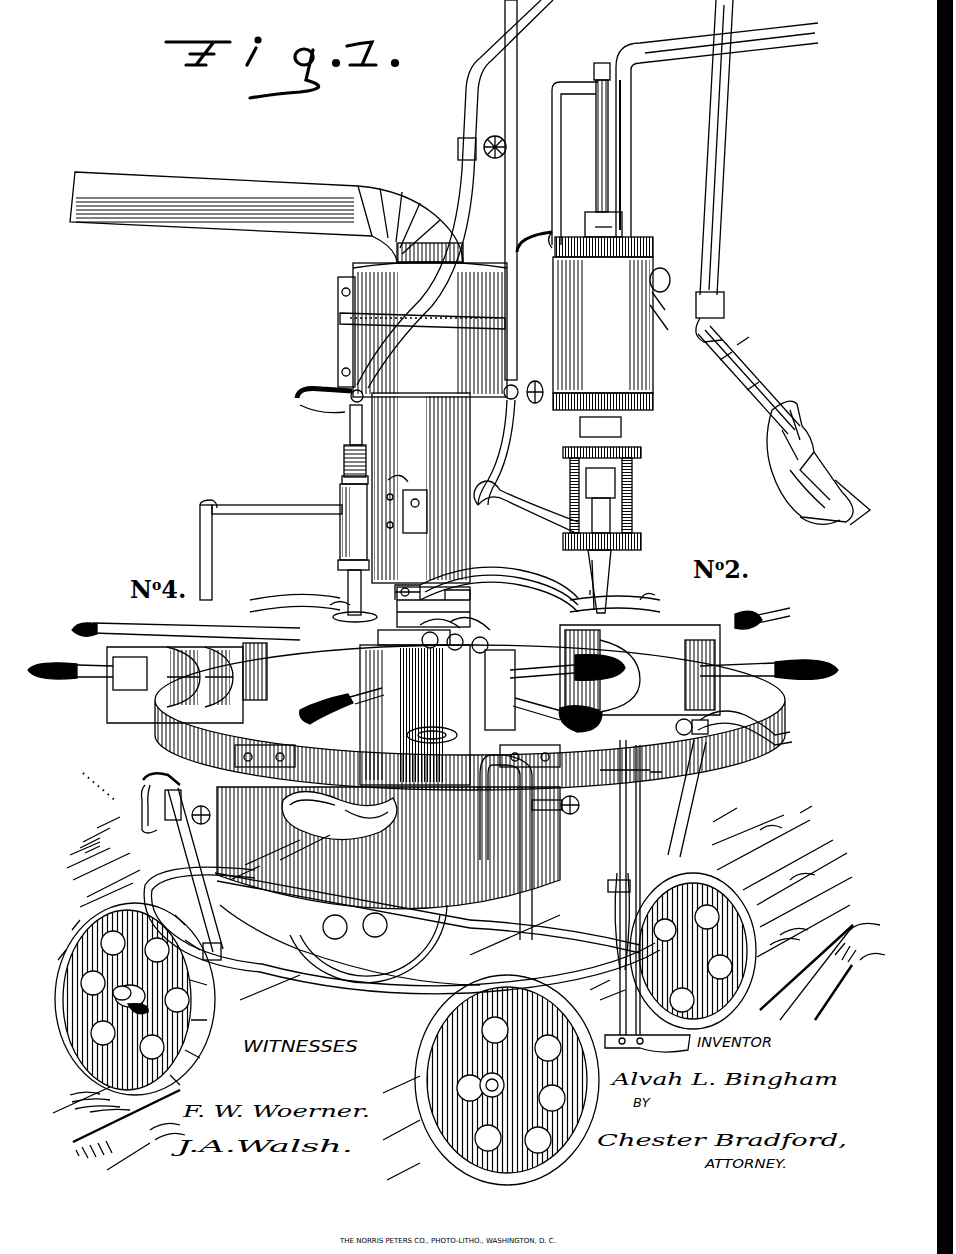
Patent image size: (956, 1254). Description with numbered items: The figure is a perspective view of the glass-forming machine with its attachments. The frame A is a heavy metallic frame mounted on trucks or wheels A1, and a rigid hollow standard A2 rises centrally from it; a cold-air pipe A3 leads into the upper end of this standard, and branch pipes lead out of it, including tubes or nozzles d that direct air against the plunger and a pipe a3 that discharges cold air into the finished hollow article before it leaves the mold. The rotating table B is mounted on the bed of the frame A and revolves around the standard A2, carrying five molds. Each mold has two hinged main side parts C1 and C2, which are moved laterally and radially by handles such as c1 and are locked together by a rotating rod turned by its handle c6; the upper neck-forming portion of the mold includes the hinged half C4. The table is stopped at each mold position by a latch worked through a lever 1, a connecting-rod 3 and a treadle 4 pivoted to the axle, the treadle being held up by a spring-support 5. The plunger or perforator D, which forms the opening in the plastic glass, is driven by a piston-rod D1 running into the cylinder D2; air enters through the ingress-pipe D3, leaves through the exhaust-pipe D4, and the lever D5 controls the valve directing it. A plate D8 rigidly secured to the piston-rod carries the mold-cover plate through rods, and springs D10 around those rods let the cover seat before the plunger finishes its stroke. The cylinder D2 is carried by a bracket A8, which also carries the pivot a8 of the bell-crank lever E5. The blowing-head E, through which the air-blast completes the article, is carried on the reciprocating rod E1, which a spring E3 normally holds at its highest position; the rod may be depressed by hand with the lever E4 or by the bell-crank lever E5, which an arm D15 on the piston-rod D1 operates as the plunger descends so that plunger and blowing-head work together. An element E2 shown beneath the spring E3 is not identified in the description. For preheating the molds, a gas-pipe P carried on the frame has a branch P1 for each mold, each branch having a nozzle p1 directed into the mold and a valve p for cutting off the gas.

The frame A is at (233, 790).
The trucks or wheels A1 is at (75, 925).
The hollow stem or standard A2 is at (410, 485).
The cold-air pipe A3 is at (185, 215).
The bracket A8 is at (512, 275).
The branch pipe a3 is at (212, 558).
The pivot a8 is at (520, 320).
The rotating table B is at (470, 717).
The main mold part C1 is at (385, 675).
The main mold part C2 is at (167, 680).
The upper mold half C4 is at (92, 622).
The handle c1 is at (433, 696).
The handle c6 is at (522, 661).
The plunger or perforator D is at (613, 570).
The piston-rod D1 is at (598, 157).
The cylinder D2 is at (611, 311).
The ingress-pipe D3 is at (633, 143).
The exhaust-pipe D4 is at (720, 218).
The lever D5 is at (735, 388).
The plate D8 is at (643, 452).
The springs D10 is at (640, 497).
The arm D15 is at (553, 128).
The tubes or nozzles d is at (548, 590).
The blowing-head E is at (345, 585).
The reciprocating or piston rod E1 is at (338, 347).
The nut E2 is at (342, 480).
The spring E3 is at (344, 456).
The lever E4 is at (312, 410).
The bell-crank lever E5 is at (345, 312).
The gas-pipe P is at (300, 978).
The branches P1 is at (178, 840).
The valves p is at (728, 740).
The nozzles p1 is at (150, 812).
The lever 1 is at (650, 778).
The connecting-rod 3 is at (642, 808).
The treadle 4 is at (640, 1045).
The spring-support 5 is at (609, 921).